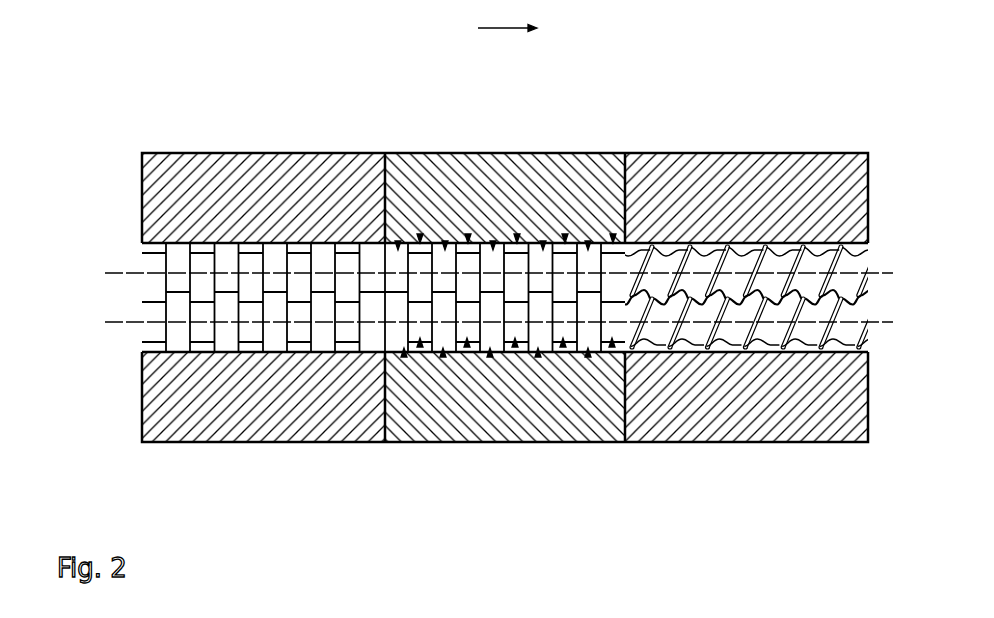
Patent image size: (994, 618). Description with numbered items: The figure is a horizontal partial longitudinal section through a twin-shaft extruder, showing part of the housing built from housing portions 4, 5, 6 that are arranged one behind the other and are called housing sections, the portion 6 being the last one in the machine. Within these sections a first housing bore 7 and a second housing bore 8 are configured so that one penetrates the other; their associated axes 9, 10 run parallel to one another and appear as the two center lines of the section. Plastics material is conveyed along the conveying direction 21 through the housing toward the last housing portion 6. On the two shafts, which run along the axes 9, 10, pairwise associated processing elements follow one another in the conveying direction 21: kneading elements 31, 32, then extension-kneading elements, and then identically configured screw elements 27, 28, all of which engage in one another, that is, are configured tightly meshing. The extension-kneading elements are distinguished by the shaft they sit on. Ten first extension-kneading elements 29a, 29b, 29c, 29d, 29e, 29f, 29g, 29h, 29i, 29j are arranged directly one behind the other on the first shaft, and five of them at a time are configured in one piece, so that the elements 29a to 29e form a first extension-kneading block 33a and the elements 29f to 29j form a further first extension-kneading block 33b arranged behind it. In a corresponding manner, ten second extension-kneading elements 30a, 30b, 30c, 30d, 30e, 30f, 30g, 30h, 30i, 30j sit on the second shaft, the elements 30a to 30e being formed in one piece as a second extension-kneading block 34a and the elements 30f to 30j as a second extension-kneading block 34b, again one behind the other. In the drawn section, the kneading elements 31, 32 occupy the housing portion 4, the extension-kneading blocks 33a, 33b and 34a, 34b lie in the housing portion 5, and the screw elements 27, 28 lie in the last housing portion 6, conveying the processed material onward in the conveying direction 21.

The housing portion 4 is at (167, 147).
The housing portion 5 is at (629, 147).
The housing portion 6 is at (759, 147).
The first housing bore 7 is at (143, 252).
The second housing bore 8 is at (143, 353).
The axis 9 is at (883, 272).
The axis 10 is at (882, 323).
The conveying direction 21 is at (507, 18).
The screw element 27 is at (723, 236).
The screw element 28 is at (754, 362).
The first extension-kneading element 29a is at (397, 241).
The first extension-kneading element 29b is at (419, 234).
The first extension-kneading element 29c is at (444, 241).
The first extension-kneading element 29d is at (467, 234).
The first extension-kneading element 29e is at (492, 241).
The first extension-kneading element 29f is at (516, 234).
The first extension-kneading element 29g is at (542, 241).
The first extension-kneading element 29h is at (565, 234).
The first extension-kneading element 29i is at (588, 241).
The first extension-kneading element 29j is at (614, 234).
The second extension-kneading element 30a is at (404, 357).
The second extension-kneading element 30b is at (421, 347).
The second extension-kneading element 30c is at (444, 357).
The second extension-kneading element 30d is at (468, 347).
The second extension-kneading element 30e is at (491, 357).
The second extension-kneading element 30f is at (516, 347).
The second extension-kneading element 30g is at (539, 357).
The second extension-kneading element 30h is at (564, 347).
The second extension-kneading element 30i is at (589, 357).
The second extension-kneading element 30j is at (613, 347).
The kneading element 31 is at (246, 233).
The kneading element 32 is at (229, 353).
The first extension-kneading block 33a is at (388, 242).
The first extension-kneading block 33b is at (597, 242).
The second extension-kneading block 34a is at (394, 362).
The second extension-kneading block 34b is at (628, 364).